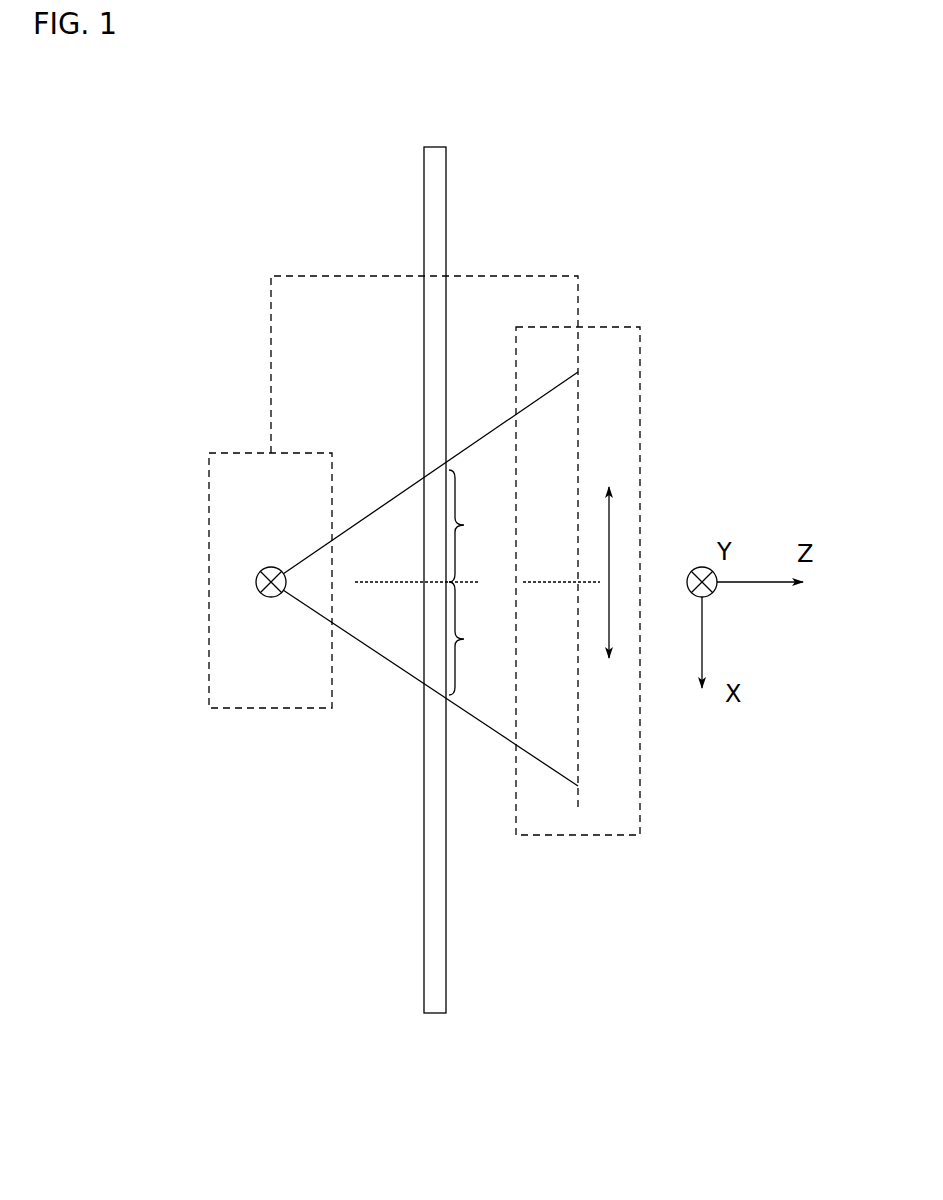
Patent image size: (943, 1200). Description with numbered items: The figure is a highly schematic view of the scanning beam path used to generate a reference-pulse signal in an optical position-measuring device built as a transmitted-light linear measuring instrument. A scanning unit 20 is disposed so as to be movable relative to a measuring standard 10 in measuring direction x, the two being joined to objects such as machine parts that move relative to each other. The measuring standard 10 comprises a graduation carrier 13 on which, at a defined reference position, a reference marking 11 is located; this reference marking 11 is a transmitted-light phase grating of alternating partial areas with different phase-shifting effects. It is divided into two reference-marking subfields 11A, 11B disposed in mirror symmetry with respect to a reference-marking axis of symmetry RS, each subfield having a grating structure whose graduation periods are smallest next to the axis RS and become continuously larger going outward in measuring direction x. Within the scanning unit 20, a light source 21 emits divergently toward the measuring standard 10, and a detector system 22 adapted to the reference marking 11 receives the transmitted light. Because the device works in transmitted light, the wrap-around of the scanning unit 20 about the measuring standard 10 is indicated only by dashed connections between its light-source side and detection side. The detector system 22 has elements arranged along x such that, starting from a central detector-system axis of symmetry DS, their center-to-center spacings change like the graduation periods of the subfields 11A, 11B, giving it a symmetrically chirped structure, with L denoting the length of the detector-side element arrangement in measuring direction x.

The measuring standard 10 is at (443, 606).
The reference marking 11 is at (406, 610).
The reference-marking subfield 11A is at (480, 526).
The reference-marking subfield 11B is at (480, 638).
The graduation carrier 13 is at (440, 951).
The scanning unit 20 is at (258, 633).
The light source 21 is at (267, 566).
The detector system 22 is at (578, 371).
The reference-marking axis of symmetry RS is at (392, 582).
The detector-system axis of symmetry DS is at (554, 582).
The length of detector-side element arrangement L is at (620, 572).